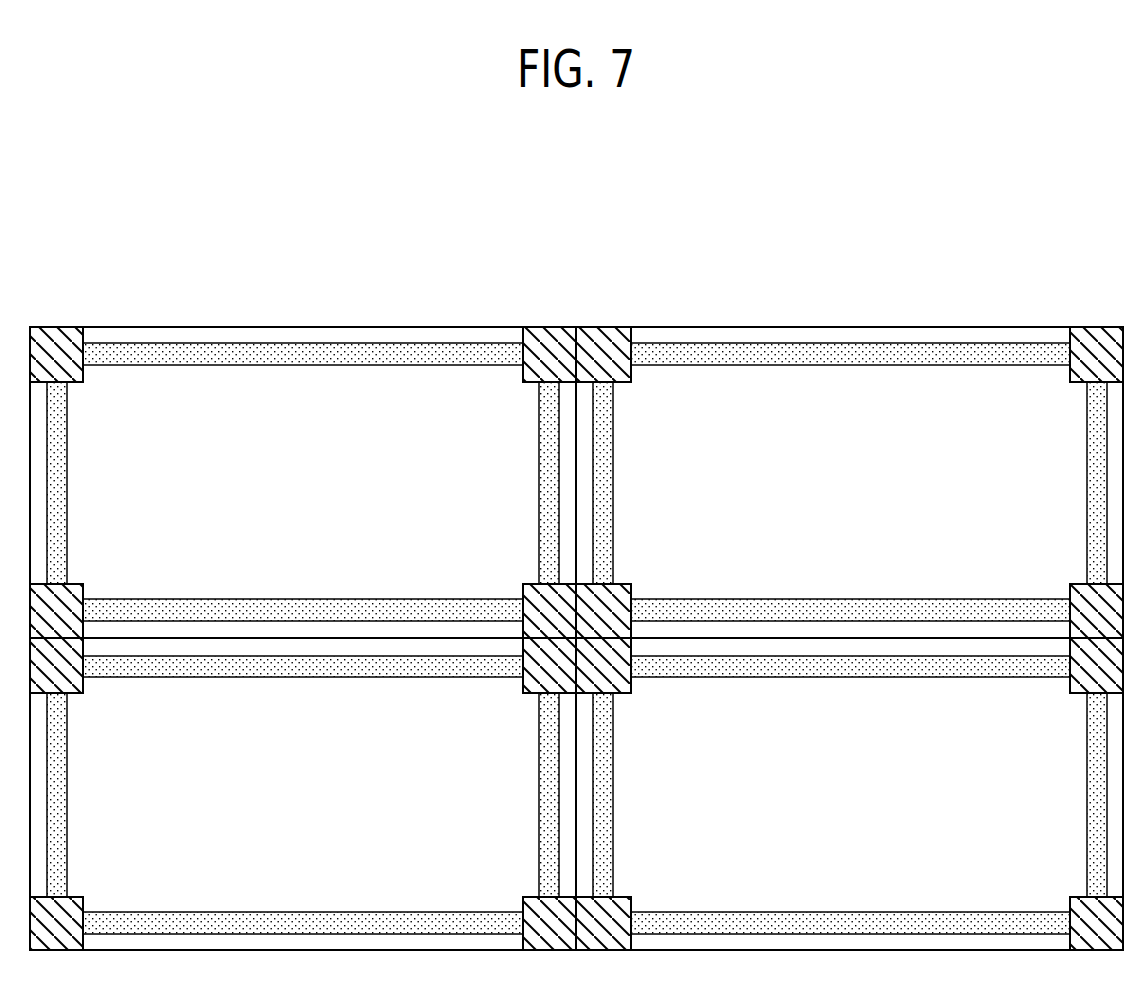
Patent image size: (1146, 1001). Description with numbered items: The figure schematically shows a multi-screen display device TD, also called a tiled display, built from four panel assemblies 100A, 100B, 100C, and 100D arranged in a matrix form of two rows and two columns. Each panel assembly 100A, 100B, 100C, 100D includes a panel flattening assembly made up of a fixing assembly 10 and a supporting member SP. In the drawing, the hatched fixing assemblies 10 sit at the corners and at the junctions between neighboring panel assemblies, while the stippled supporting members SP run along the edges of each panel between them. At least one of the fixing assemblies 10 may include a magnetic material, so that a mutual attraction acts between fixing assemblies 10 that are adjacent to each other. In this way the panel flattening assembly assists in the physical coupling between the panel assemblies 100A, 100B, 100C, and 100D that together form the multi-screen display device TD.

The multi-screen display device TD is at (703, 223).
The fixing assembly 10 is at (55, 333).
The supporting member SP is at (298, 350).
The panel assembly 100A is at (328, 497).
The panel assembly 100B is at (875, 497).
The panel assembly 100C is at (328, 810).
The panel assembly 100D is at (875, 810).